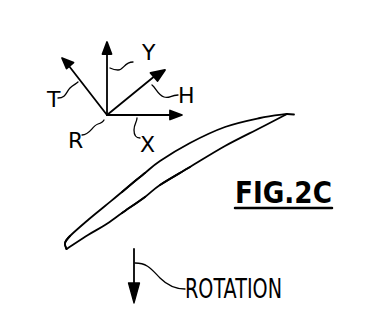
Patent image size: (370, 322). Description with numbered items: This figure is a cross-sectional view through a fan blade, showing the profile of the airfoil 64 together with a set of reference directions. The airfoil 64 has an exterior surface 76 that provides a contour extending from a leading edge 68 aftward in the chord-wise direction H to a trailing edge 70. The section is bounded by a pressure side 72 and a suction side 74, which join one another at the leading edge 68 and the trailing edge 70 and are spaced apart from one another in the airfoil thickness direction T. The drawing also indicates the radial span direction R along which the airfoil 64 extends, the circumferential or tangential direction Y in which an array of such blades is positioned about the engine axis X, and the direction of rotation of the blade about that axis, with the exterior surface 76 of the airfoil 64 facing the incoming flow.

The airfoil 64 is at (233, 108).
The leading edge 68 is at (66, 249).
The trailing edge 70 is at (287, 114).
The pressure side 72 is at (135, 204).
The suction side 74 is at (133, 181).
The exterior surface 76 is at (162, 188).